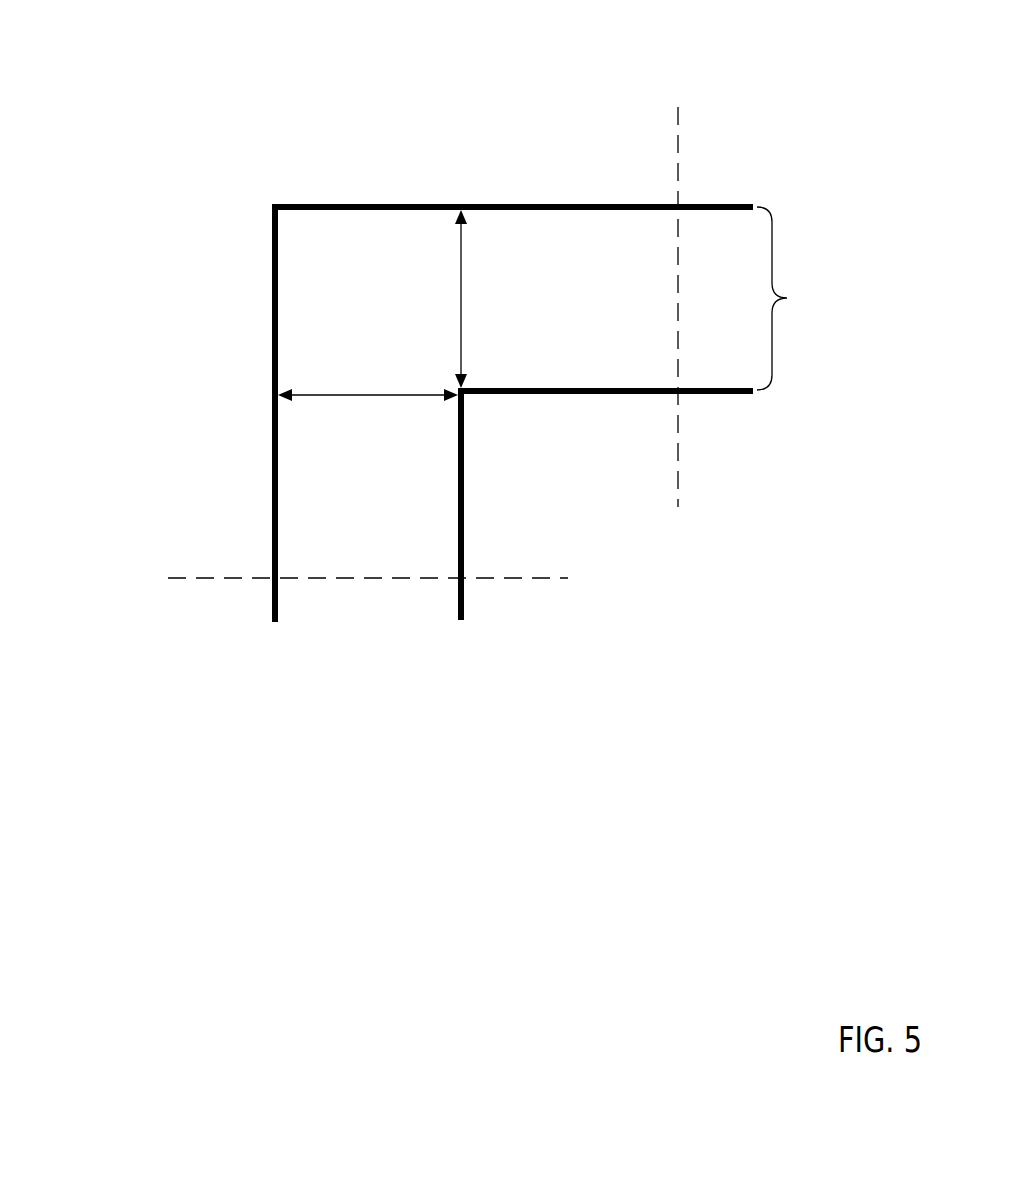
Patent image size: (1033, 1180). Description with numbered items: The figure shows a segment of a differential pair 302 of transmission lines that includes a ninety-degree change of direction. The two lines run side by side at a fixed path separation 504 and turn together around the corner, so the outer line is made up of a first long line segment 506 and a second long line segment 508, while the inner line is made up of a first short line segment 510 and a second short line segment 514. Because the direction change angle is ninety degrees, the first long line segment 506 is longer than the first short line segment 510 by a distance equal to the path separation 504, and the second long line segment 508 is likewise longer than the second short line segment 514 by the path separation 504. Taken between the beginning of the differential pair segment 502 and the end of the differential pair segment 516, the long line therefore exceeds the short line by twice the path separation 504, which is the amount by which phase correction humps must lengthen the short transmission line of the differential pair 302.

The differential pair 302 is at (875, 327).
The beginning of the differential pair segment 502 is at (660, 121).
The path separation 504 is at (115, 457).
The first long line segment 506 is at (420, 161).
The second long line segment 508 is at (256, 289).
The first short line segment 510 is at (584, 373).
The second short line segment 514 is at (549, 542).
The end of the differential pair segment 516 is at (58, 627).